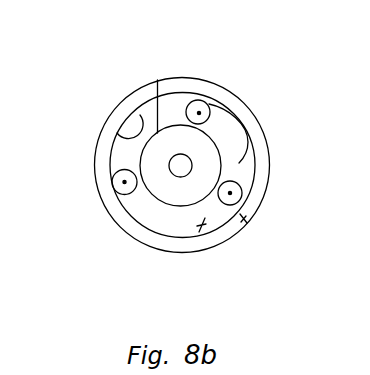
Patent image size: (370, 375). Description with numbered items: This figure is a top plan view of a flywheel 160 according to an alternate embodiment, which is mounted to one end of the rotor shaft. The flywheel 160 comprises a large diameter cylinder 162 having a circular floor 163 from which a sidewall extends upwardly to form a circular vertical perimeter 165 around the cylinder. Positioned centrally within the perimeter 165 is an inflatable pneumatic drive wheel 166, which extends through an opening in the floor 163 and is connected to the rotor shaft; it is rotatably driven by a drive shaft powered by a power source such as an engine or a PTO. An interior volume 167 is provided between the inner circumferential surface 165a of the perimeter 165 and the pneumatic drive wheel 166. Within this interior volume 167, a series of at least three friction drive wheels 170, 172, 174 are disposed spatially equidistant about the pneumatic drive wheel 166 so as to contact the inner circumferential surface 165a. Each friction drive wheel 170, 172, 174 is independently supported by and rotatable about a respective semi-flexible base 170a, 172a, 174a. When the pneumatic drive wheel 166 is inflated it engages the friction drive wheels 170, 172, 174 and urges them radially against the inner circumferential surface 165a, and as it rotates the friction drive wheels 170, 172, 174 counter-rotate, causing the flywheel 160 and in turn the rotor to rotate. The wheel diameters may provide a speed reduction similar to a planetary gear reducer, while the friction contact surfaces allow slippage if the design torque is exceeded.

The flywheel 160 is at (228, 89).
The large diameter cylinder 162 is at (249, 107).
The circular floor 163 is at (195, 220).
The circular vertical perimeter 165 is at (242, 218).
The inner circumferential surface 165a is at (122, 133).
The pneumatic drive wheel 166 is at (156, 82).
The interior volume 167 is at (262, 126).
The friction drive wheel 170 is at (195, 100).
The semi-flexible base 170a is at (200, 110).
The friction drive wheel 172 is at (122, 182).
The semi-flexible base 172a is at (120, 187).
The friction drive wheel 174 is at (258, 182).
The semi-flexible base 174a is at (233, 196).